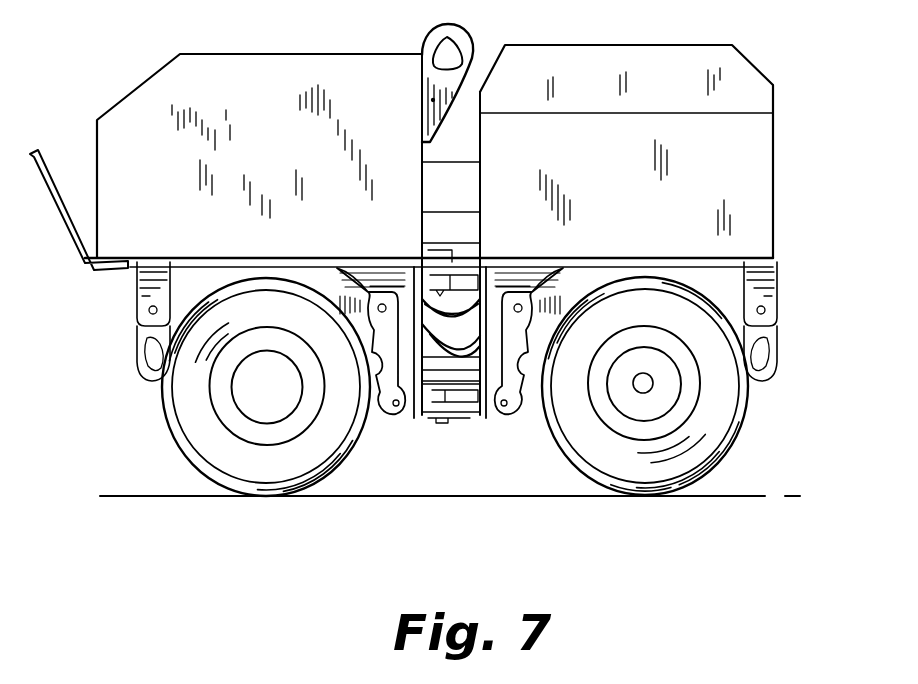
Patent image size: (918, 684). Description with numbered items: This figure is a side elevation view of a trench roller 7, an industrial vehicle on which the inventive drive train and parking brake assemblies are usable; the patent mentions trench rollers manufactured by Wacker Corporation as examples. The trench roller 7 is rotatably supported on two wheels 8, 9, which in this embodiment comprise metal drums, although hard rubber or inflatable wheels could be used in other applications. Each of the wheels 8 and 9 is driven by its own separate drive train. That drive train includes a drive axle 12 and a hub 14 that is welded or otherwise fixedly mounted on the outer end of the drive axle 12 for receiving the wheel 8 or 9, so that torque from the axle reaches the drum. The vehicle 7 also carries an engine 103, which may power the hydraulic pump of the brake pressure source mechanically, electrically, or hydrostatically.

The trench roller 7 is at (795, 104).
The engine 103 is at (752, 190).
The wheel 8 is at (165, 413).
The wheel 9 is at (658, 408).
The drive axle 12 is at (640, 390).
The hub 14 is at (693, 425).